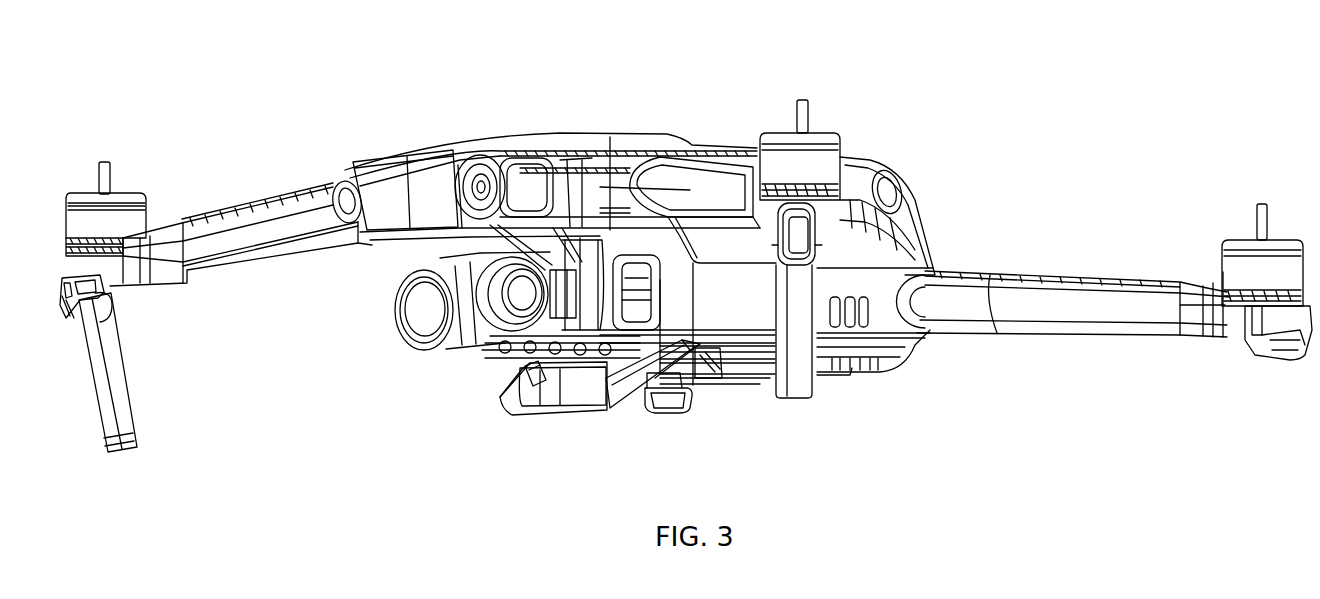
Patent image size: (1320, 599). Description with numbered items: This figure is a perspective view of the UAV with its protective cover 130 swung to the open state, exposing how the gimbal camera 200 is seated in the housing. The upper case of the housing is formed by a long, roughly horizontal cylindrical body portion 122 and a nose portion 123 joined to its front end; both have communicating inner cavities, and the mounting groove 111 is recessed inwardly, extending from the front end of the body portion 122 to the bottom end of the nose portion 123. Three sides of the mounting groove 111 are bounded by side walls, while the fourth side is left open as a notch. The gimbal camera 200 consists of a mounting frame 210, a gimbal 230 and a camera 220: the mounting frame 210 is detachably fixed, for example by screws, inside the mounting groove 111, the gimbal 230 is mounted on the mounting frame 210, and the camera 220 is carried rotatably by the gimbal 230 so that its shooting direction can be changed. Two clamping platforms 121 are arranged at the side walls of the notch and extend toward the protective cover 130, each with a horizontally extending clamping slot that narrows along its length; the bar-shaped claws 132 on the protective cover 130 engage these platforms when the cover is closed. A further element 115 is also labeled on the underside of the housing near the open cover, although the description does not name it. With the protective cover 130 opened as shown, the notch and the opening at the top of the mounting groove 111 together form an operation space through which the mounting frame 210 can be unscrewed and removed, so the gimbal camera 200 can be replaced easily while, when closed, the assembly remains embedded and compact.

The mounting groove 111 is at (559, 414).
The support foot 115 is at (651, 412).
The clamping platform 121 is at (503, 343).
The body portion 122 is at (745, 305).
The nose portion 123 is at (385, 160).
The protective cover 130 is at (606, 398).
The claw 132 is at (503, 394).
The gimbal camera 200 is at (451, 315).
The mounting frame 210 is at (605, 205).
The camera 220 is at (393, 290).
The gimbal 230 is at (570, 225).